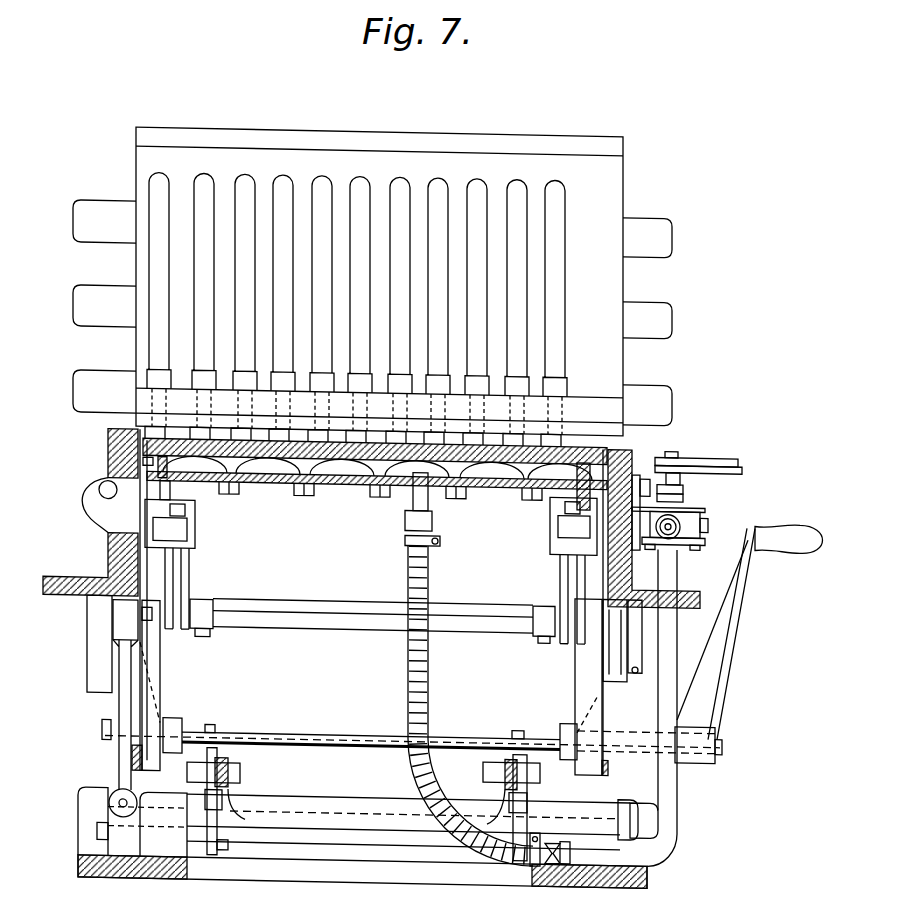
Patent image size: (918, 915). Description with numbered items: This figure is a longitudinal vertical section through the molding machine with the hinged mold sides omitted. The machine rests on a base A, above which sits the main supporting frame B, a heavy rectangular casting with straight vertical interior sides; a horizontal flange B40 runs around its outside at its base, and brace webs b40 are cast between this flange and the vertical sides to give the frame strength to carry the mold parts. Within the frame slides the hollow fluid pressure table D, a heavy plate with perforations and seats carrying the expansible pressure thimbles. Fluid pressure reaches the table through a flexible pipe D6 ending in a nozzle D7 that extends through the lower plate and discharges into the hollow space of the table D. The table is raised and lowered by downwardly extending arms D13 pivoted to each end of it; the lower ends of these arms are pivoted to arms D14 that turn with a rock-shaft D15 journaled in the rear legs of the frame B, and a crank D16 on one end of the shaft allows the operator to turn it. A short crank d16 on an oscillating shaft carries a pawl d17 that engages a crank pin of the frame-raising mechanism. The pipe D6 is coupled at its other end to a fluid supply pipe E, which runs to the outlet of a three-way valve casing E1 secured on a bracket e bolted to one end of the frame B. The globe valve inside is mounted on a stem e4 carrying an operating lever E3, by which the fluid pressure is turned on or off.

The base A is at (645, 872).
The main supporting frame B is at (108, 568).
The horizontal flange B40 is at (62, 607).
The brace web b40 is at (82, 524).
The fluid pressure table D is at (336, 488).
The flexible pipe D6 is at (426, 698).
The nozzle D7 is at (424, 505).
The downwardly extending arm D13 is at (142, 593).
The arm D14 is at (133, 675).
The rock-shaft D15 is at (269, 735).
The crank D16 is at (773, 668).
The short crank d16 is at (227, 850).
The pawl d17 is at (212, 796).
The fluid supply pipe E is at (672, 793).
The three-way valve casing E1 is at (705, 520).
The operating lever E3 is at (708, 456).
The bracket e is at (641, 512).
The valve stem e4 is at (680, 477).